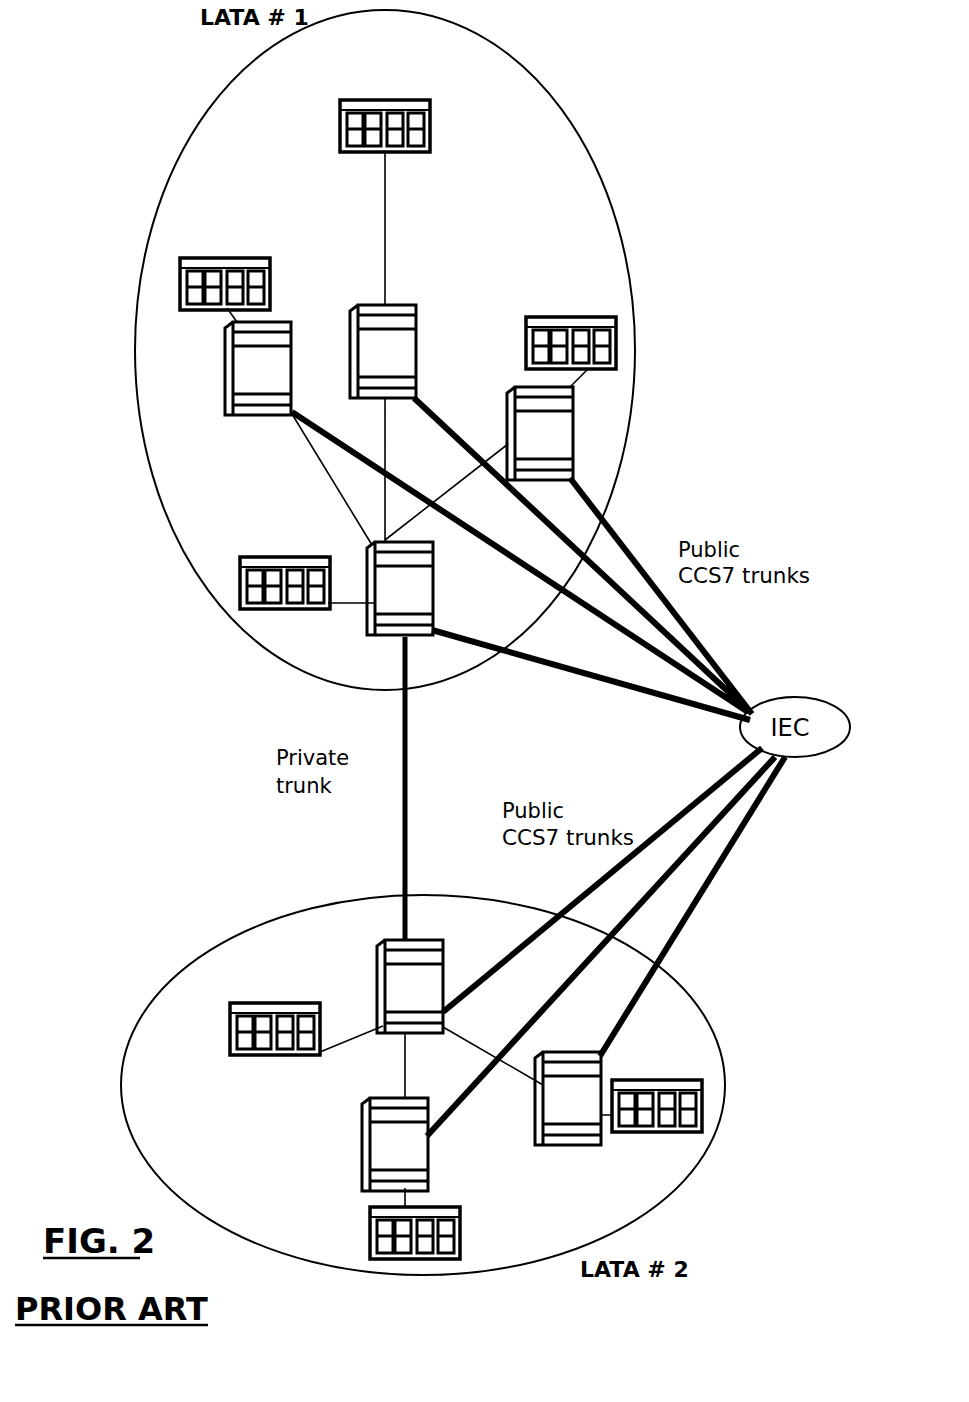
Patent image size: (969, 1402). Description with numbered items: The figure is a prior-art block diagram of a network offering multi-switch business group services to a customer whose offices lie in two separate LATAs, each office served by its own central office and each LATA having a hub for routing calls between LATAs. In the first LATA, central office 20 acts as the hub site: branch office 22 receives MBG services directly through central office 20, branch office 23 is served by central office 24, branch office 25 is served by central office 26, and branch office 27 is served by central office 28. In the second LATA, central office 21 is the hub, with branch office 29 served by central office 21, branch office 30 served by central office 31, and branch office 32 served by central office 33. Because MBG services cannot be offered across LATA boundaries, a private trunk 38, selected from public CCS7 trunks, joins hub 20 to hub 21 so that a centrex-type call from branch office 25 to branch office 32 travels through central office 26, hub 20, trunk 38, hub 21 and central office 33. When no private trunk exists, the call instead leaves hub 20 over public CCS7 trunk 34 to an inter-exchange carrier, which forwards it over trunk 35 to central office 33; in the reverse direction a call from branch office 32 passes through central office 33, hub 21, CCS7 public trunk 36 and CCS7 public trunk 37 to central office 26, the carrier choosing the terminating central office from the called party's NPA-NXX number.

The central office hub 20 is at (433, 558).
The central office hub 21 is at (394, 940).
The branch office 22 is at (288, 557).
The branch office 23 is at (222, 258).
The central office 24 is at (232, 412).
The branch office 25 is at (393, 100).
The central office 26 is at (391, 310).
The branch office 27 is at (543, 317).
The central office 28 is at (573, 432).
The branch office 29 is at (270, 1055).
The branch office 30 is at (370, 1238).
The central office 31 is at (365, 1185).
The branch office 32 is at (663, 1080).
The central office 33 is at (546, 1146).
The public CCS7 trunk 34 is at (597, 682).
The trunk 35 is at (740, 840).
The CCS7 public trunk 36 is at (704, 783).
The CCS7 public trunk 37 is at (603, 562).
The private trunk 38 is at (401, 768).